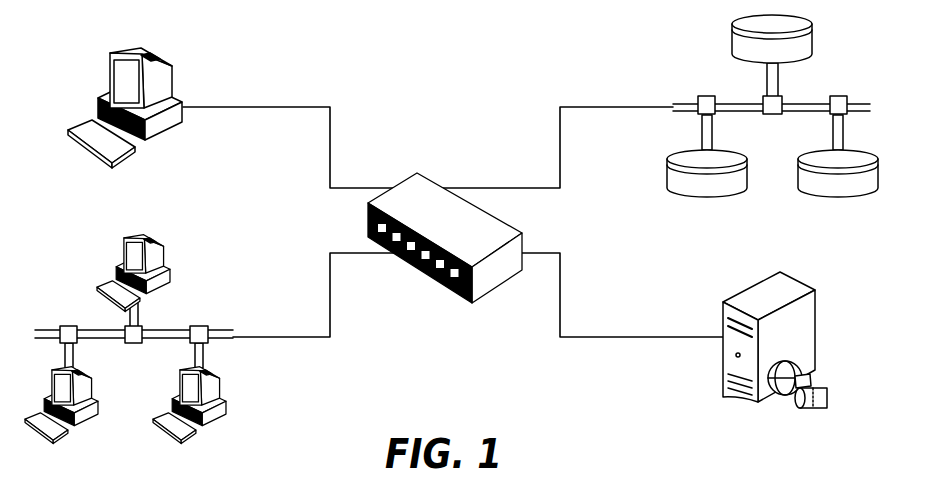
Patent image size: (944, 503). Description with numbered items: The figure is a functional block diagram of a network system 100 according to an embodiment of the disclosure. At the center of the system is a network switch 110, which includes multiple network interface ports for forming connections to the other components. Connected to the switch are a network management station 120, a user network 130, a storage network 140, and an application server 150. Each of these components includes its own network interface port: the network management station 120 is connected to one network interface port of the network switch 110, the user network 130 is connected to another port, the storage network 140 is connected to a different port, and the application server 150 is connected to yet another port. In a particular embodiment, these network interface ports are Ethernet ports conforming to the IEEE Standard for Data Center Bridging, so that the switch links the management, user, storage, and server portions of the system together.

The network system 100 is at (464, 398).
The network switch 110 is at (420, 173).
The network management station 120 is at (120, 50).
The user network 130 is at (207, 266).
The storage network 140 is at (658, 70).
The application server 150 is at (778, 273).